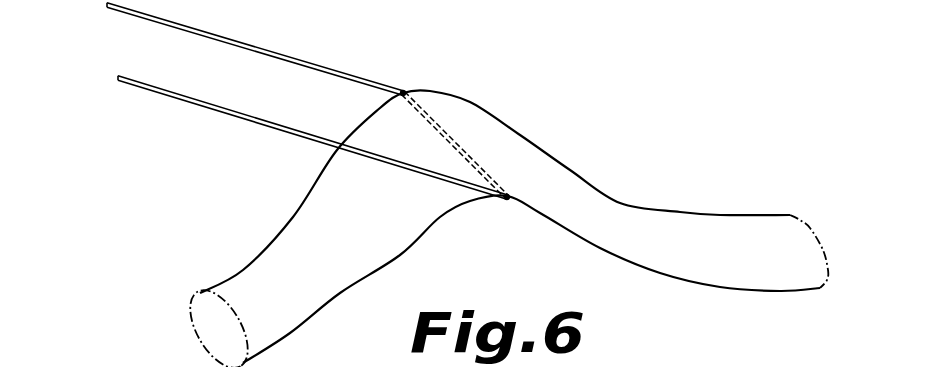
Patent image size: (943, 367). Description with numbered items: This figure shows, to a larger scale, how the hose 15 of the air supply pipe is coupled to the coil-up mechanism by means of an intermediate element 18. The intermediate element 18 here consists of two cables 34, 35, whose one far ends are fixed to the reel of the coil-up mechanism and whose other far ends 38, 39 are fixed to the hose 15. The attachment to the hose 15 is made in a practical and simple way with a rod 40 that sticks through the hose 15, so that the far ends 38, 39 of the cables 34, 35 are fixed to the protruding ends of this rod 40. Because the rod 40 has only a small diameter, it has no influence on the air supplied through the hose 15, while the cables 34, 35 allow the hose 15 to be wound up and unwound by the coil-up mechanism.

The hose 15 is at (612, 208).
The intermediate element 18 is at (130, 143).
The cable 34 is at (277, 54).
The cable 35 is at (250, 127).
The far end 38 is at (403, 90).
The far end 39 is at (507, 200).
The rod 40 is at (450, 133).